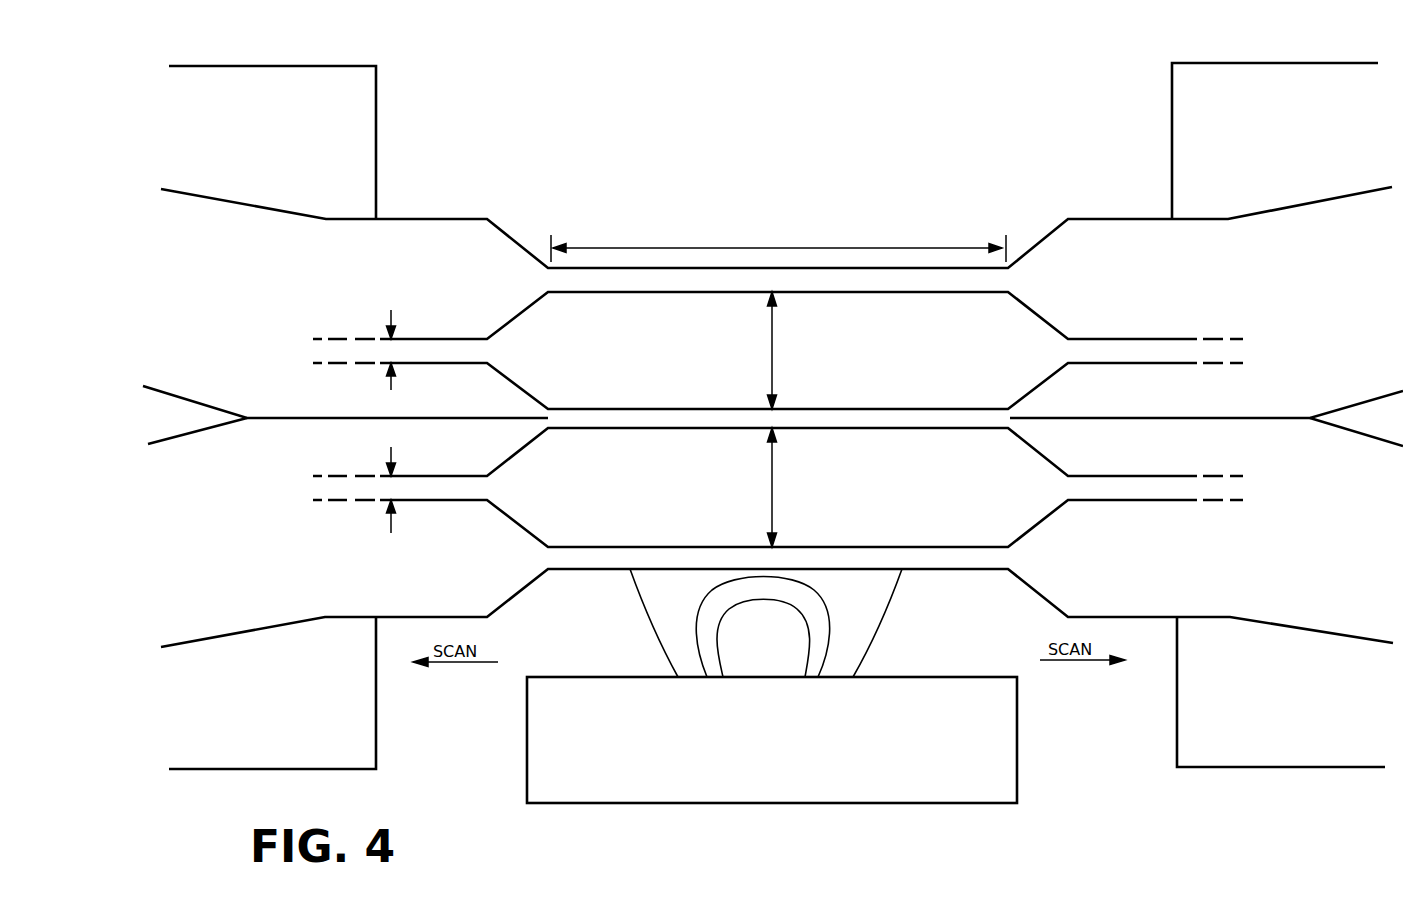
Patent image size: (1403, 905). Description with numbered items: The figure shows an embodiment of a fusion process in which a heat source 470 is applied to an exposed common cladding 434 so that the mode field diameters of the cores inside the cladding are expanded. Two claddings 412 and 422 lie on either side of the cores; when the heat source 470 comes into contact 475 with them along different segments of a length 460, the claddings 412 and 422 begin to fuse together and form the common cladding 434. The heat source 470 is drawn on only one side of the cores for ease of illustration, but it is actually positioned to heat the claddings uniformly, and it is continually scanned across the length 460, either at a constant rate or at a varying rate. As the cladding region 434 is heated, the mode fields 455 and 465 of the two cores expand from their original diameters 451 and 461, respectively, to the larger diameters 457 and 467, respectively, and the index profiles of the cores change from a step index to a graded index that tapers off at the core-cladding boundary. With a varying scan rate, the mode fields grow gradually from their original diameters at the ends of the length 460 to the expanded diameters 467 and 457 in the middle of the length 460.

The cladding 412 is at (256, 328).
The cladding 422 is at (256, 527).
The common cladding 434 is at (773, 416).
The original mode field diameter 451 is at (391, 460).
The mode field 455 is at (971, 512).
The expanded mode field diameter 457 is at (772, 510).
The length 460 is at (847, 248).
The original mode field diameter 461 is at (391, 322).
The mode field 465 is at (971, 364).
The expanded mode field diameter 467 is at (772, 372).
The heat source 470 is at (971, 793).
The contact 475 is at (904, 571).